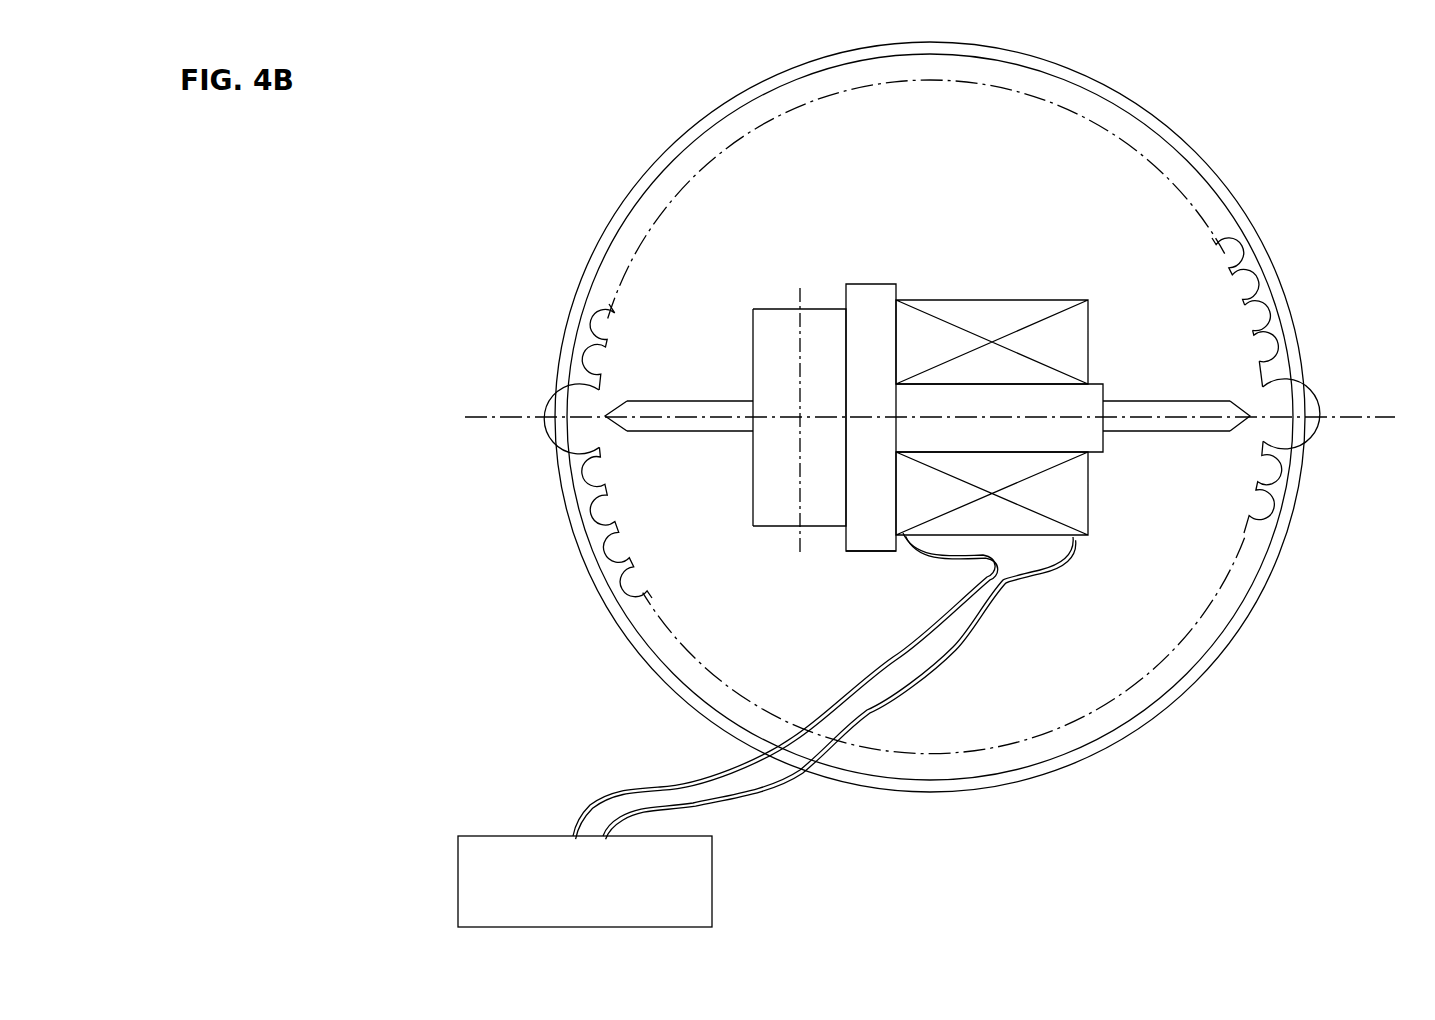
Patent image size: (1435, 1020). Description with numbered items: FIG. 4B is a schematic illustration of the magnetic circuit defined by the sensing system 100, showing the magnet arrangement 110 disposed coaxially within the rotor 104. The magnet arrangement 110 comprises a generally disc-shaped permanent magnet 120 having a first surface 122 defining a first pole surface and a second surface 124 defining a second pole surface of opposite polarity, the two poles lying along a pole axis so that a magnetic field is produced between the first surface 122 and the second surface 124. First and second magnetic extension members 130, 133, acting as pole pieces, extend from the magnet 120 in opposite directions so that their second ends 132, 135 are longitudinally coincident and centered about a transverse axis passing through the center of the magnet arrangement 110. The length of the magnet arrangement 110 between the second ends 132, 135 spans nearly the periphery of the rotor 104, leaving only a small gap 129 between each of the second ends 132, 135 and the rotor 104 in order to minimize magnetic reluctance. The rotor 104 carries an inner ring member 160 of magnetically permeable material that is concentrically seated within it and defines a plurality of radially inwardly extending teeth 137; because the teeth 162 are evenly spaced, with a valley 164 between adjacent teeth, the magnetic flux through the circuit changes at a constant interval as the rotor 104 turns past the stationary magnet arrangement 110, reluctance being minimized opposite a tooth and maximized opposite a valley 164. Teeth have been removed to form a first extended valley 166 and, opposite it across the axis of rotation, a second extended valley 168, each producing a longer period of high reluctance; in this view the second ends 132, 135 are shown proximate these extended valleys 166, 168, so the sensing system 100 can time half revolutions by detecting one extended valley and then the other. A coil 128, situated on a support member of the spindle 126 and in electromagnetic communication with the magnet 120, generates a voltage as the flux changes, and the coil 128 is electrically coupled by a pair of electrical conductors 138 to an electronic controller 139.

The sensing system 100 is at (543, 165).
The rotor 104 is at (1193, 162).
The magnet arrangement 110 is at (778, 283).
The permanent magnet 120 is at (770, 483).
The first surface 122 is at (753, 377).
The second surface 124 is at (846, 348).
The spindle 126 is at (872, 543).
The coil 128 is at (1000, 310).
The gap 129 is at (592, 414).
The first magnetic extension member 130 is at (688, 428).
The second end of first magnetic extension member 132 is at (605, 418).
The second magnetic extension member 133 is at (1190, 408).
The second end of second magnetic extension member 135 is at (1252, 420).
The teeth 137 is at (1213, 342).
The electrical conductors 138 is at (727, 778).
The electronic controller 139 is at (718, 878).
The inner ring member 160 is at (1243, 240).
The teeth 162 is at (1258, 343).
The valley 164 is at (1253, 325).
The first extended valley 166 is at (1248, 438).
The second extended valley 168 is at (604, 387).